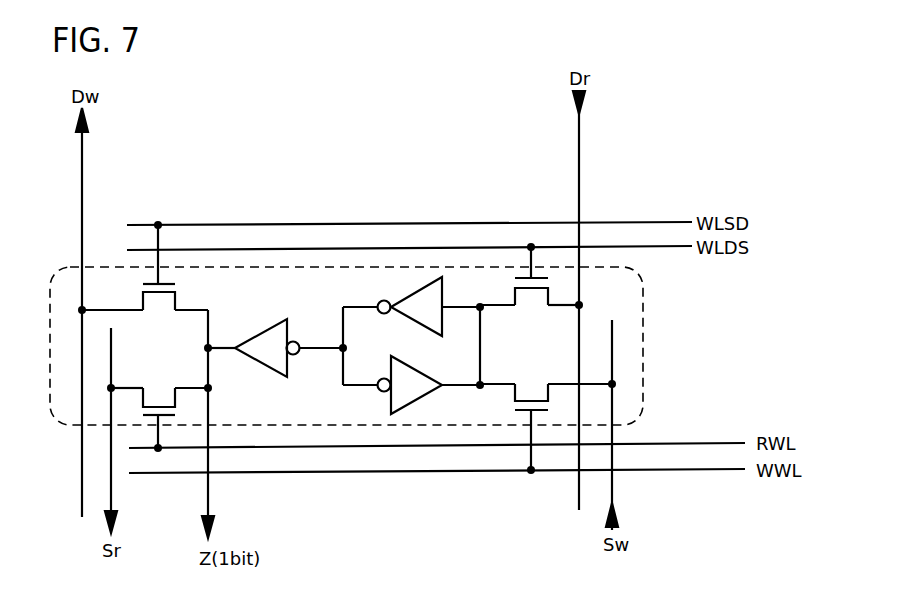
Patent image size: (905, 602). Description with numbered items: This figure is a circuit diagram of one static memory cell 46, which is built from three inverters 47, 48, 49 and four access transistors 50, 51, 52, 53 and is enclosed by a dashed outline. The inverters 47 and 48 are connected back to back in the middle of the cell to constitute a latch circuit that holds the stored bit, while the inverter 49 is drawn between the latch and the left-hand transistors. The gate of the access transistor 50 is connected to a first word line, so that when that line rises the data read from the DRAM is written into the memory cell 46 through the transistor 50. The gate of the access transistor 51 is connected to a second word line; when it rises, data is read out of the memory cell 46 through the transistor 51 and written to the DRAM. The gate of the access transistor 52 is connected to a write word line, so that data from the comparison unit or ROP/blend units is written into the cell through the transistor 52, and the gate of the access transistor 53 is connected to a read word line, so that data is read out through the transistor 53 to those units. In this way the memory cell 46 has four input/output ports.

The memory cell 46 is at (308, 267).
The inverter 47 is at (408, 300).
The inverter 48 is at (392, 401).
The inverter 49 is at (267, 337).
The access transistor 50 is at (530, 293).
The access transistor 51 is at (154, 312).
The access transistor 52 is at (534, 394).
The access transistor 53 is at (162, 395).